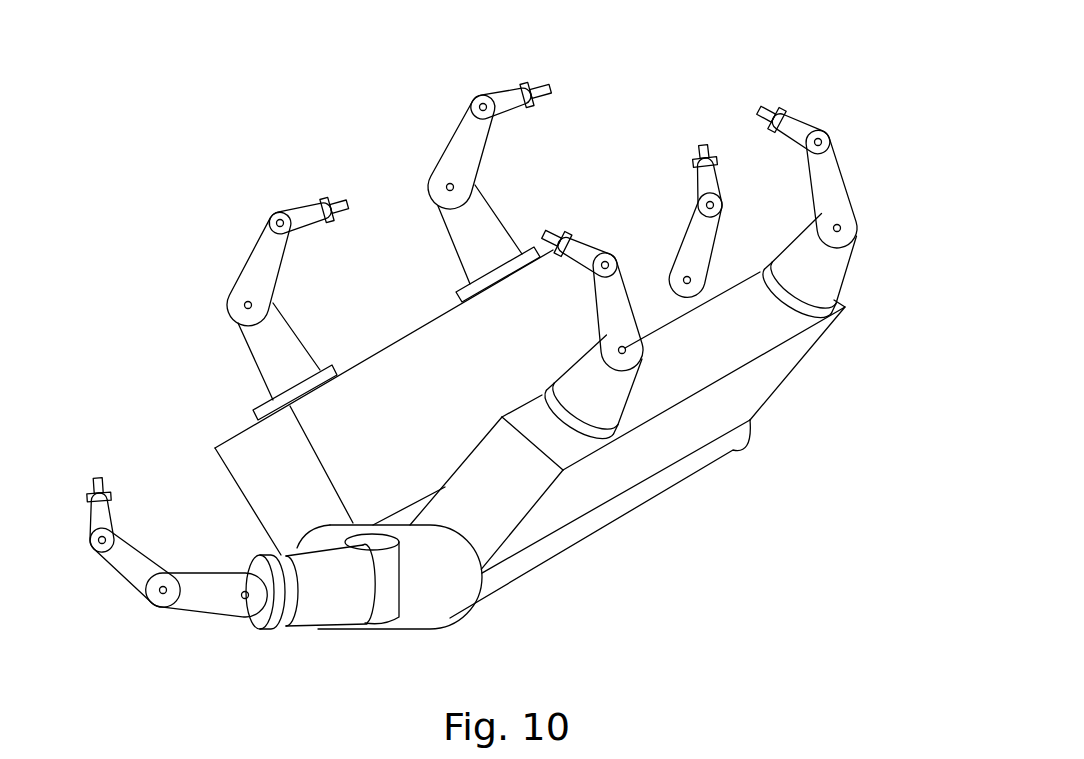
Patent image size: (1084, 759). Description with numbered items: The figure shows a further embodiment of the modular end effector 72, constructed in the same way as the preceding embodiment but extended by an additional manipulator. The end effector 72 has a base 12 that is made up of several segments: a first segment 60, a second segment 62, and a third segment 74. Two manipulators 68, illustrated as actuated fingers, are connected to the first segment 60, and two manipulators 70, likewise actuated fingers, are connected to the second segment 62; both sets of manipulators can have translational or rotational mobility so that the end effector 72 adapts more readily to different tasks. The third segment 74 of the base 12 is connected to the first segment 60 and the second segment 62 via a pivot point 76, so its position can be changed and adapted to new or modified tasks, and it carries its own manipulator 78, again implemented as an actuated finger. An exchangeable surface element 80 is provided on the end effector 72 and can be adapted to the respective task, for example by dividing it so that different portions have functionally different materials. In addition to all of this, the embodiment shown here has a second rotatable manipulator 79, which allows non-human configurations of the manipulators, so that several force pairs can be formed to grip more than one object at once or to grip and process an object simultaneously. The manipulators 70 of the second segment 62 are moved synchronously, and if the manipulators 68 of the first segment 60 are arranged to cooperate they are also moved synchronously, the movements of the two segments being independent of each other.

The base 12 is at (667, 555).
The first segment 60 is at (492, 512).
The second segment 62 is at (270, 468).
The manipulators 68 is at (613, 318).
The manipulators 70 is at (262, 267).
The modular end effector 72 is at (830, 85).
The third segment 74 is at (325, 590).
The pivot point 76 is at (378, 588).
The manipulator 78 is at (135, 572).
The second rotatable manipulator 79 is at (695, 245).
The exchangeable surface element 80 is at (372, 453).